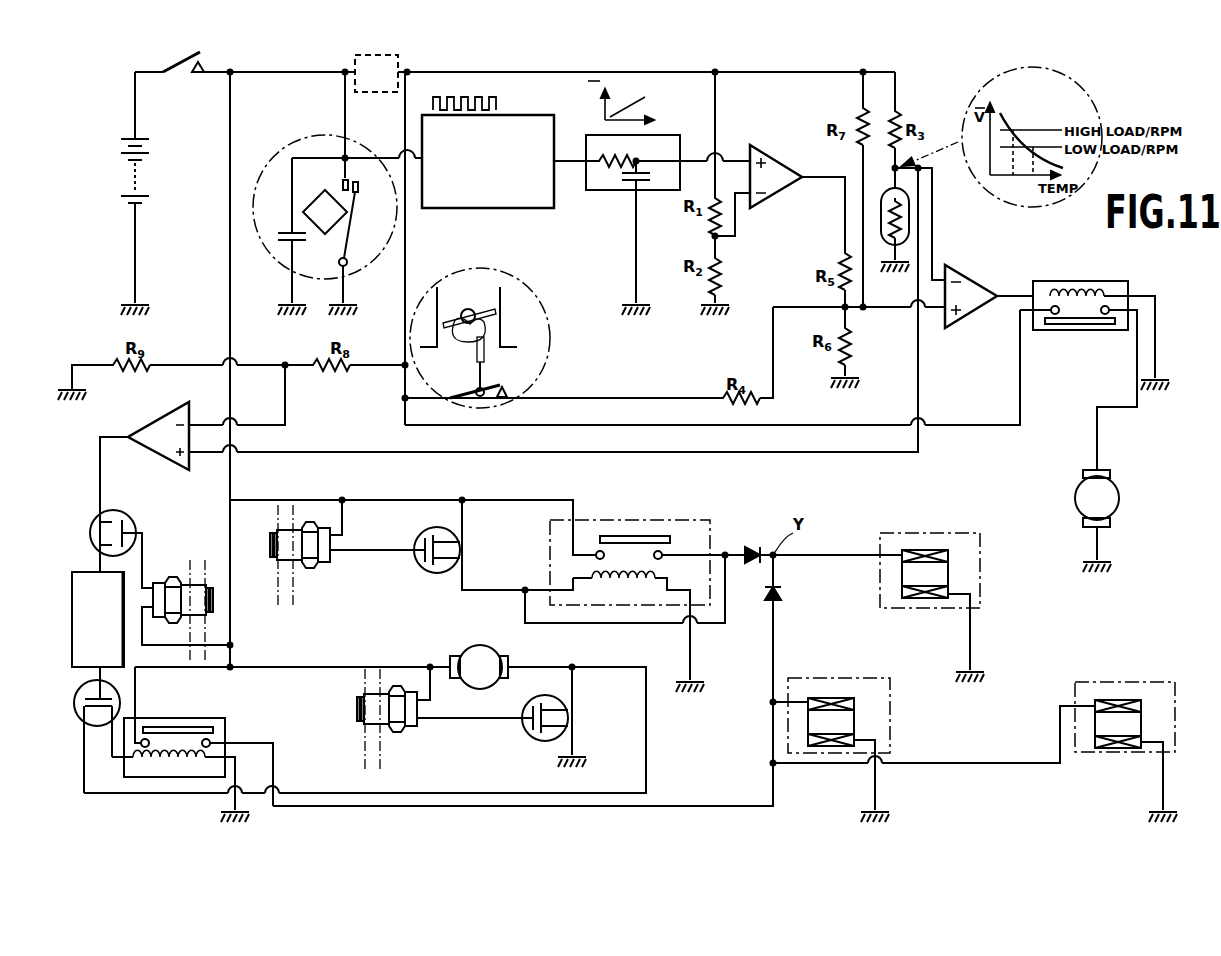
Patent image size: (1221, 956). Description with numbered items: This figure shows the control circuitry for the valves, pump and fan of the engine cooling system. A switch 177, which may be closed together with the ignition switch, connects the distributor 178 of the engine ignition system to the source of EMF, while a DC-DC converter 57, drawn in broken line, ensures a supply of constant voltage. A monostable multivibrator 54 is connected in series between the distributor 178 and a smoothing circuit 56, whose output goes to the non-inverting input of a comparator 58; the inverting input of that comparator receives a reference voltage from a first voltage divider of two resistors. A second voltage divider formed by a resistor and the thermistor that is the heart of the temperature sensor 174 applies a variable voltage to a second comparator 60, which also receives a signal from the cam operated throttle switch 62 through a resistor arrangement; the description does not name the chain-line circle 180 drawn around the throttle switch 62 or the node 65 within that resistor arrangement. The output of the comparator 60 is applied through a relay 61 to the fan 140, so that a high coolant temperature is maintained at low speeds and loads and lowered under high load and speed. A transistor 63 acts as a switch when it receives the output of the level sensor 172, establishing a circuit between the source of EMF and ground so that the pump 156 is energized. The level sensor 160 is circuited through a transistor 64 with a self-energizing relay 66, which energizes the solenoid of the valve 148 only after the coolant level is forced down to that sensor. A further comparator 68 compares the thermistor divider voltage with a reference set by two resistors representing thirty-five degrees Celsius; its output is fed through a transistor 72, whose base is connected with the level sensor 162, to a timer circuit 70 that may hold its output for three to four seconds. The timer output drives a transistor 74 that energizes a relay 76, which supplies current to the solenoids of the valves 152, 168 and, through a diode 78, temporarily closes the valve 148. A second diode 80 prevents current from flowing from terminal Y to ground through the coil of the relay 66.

The switch 177 is at (185, 72).
The distributor 178 is at (268, 163).
The DC-DC converter 57 is at (382, 95).
The monostable multivibrator 54 is at (522, 210).
The smoothing circuit 56 is at (597, 192).
The comparator 58 is at (778, 196).
The centrifugal governor 180 is at (537, 290).
The cam operated throttle switch 62 is at (502, 392).
The reference voltage junction 65 is at (866, 310).
The second comparator 60 is at (975, 330).
The relay 61 is at (1108, 281).
The fan 140 is at (1118, 503).
The comparator 68 is at (152, 420).
The transistor 72 is at (95, 521).
The timer circuit 70 is at (85, 572).
The level sensor 162 is at (190, 595).
The level sensor 160 is at (284, 556).
The transistor 64 is at (420, 535).
The self-energizing relay 66 is at (688, 520).
The second diode 80 is at (753, 545).
The diode 78 is at (783, 600).
The valve 148 is at (890, 530).
The valve 152 is at (828, 678).
The valve 168 is at (1132, 682).
The pump 156 is at (476, 646).
The level sensor 172 is at (366, 705).
The transistor 63 is at (568, 717).
The transistor 74 is at (78, 704).
The relay 76 is at (208, 718).
The temperature sensor 174 is at (954, 207).